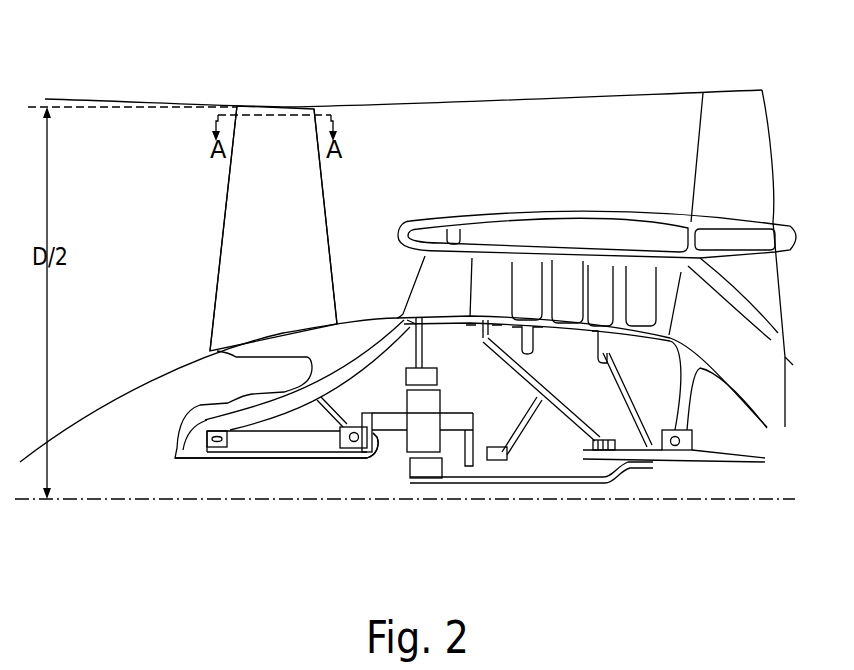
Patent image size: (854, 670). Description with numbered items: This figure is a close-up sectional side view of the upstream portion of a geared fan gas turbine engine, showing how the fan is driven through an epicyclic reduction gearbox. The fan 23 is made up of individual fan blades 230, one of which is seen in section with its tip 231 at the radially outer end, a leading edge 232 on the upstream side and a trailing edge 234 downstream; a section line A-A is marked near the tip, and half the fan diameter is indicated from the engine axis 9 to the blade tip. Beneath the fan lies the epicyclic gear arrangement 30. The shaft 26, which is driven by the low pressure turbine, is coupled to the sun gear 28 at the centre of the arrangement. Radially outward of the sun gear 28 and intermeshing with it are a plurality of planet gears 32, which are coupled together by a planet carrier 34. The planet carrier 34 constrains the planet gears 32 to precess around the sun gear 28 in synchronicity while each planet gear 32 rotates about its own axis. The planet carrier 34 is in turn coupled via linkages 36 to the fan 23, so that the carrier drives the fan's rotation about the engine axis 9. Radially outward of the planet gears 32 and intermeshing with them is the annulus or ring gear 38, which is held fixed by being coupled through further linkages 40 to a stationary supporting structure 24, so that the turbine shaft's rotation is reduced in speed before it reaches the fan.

The engine axis 9 is at (200, 501).
The fan 23 is at (240, 273).
The fan blade 230 is at (240, 217).
The tip 231 is at (277, 106).
The leading edge 232 is at (215, 246).
The trailing edge 234 is at (324, 170).
The stationary supporting structure 24 is at (431, 283).
The shaft 26 is at (569, 482).
The sun gear 28 is at (425, 468).
The epicyclic gear arrangement 30 is at (382, 445).
The planet gears 32 is at (412, 440).
The planet carrier 34 is at (460, 457).
The linkages 36 is at (374, 476).
The ring gear 38 is at (409, 375).
The linkages 40 is at (424, 355).